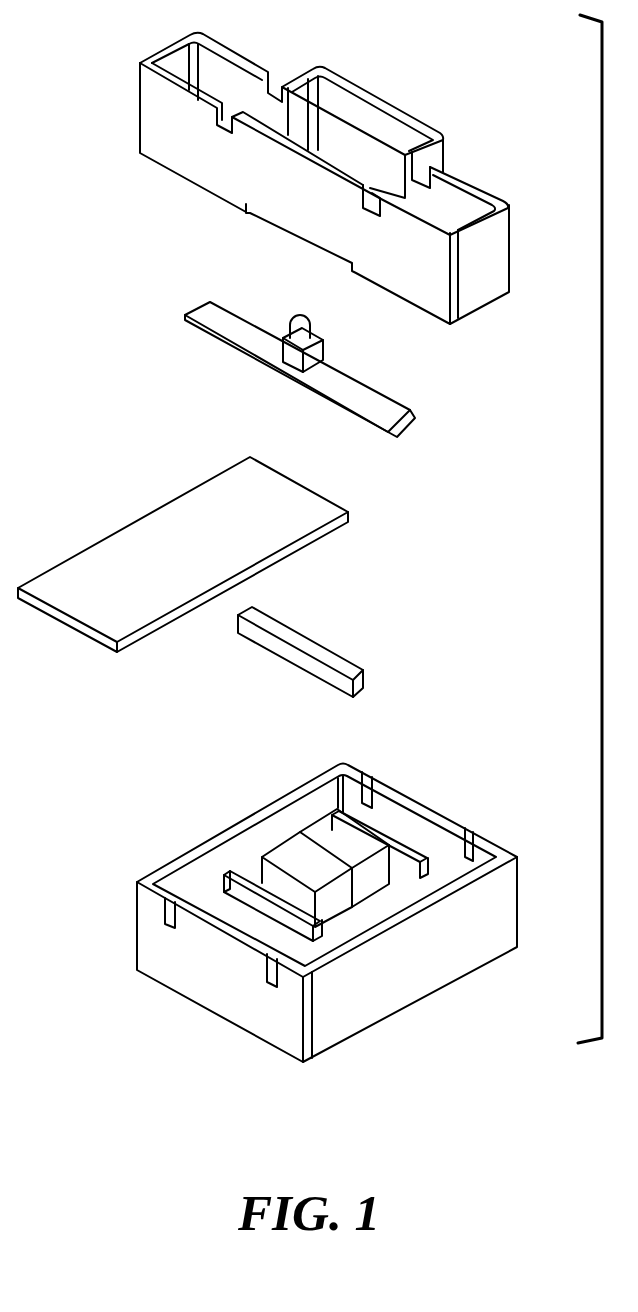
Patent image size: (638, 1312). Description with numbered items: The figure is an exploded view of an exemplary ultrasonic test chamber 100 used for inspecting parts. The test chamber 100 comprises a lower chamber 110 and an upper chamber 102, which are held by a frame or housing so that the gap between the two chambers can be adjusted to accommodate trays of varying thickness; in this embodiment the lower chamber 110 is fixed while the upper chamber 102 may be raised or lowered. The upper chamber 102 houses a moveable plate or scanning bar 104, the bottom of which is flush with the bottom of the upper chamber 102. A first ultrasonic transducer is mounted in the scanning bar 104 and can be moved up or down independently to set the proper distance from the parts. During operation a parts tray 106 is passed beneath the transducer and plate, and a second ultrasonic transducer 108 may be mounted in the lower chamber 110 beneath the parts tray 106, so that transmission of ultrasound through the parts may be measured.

The test chamber 100 is at (128, 1108).
The upper chamber 102 is at (483, 287).
The scanning bar 104 is at (409, 422).
The parts tray 106 is at (330, 527).
The second ultrasonic transducer 108 is at (363, 678).
The lower chamber 110 is at (455, 960).